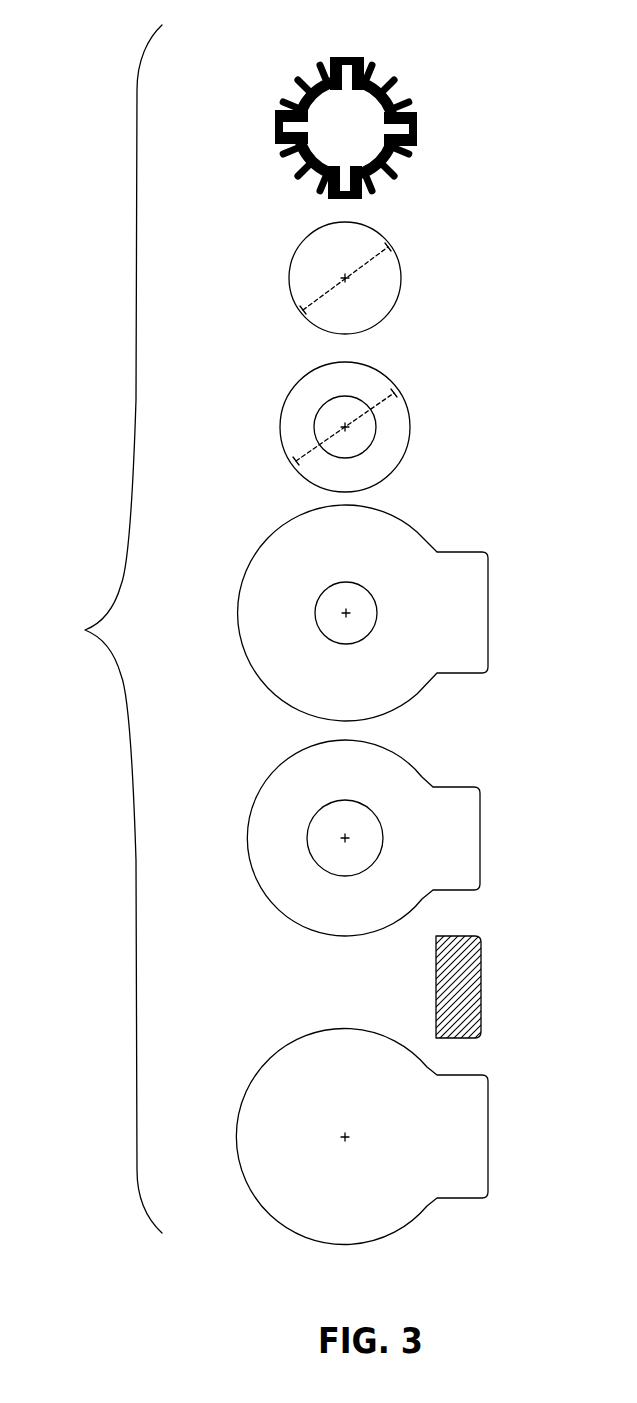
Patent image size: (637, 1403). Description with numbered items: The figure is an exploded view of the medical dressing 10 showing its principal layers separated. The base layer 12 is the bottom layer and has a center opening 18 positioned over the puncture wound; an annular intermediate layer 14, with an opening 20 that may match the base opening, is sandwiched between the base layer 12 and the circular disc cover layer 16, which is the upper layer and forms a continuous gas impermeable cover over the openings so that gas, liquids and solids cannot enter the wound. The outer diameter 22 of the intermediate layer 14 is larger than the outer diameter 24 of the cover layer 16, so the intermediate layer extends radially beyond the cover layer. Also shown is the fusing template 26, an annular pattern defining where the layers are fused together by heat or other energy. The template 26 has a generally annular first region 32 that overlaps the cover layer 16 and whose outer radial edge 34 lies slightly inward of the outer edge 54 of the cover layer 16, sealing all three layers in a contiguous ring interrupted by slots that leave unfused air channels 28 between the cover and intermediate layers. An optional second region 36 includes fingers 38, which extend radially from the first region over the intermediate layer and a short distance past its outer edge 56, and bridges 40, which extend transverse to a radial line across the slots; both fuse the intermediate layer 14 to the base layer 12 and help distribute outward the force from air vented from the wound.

The medical dressing 10 is at (105, 629).
The base layer 12 is at (339, 613).
The annular intermediate layer 14 is at (347, 436).
The circular disc cover layer 16 is at (353, 284).
The center opening 18 is at (328, 603).
The opening 20 is at (324, 417).
The outer diameter of intermediate layer 22 is at (298, 462).
The outer diameter of cover layer 24 is at (310, 302).
The fusing template 26 is at (280, 108).
The air channels 28 is at (393, 98).
The first region 32 is at (408, 122).
The outer radial edge 34 is at (390, 133).
The second region 36 is at (302, 80).
The fingers 38 is at (372, 68).
The bridges 40 is at (343, 57).
The outer edge of cover layer 54 is at (402, 270).
The outer edge of intermediate layer 56 is at (410, 432).